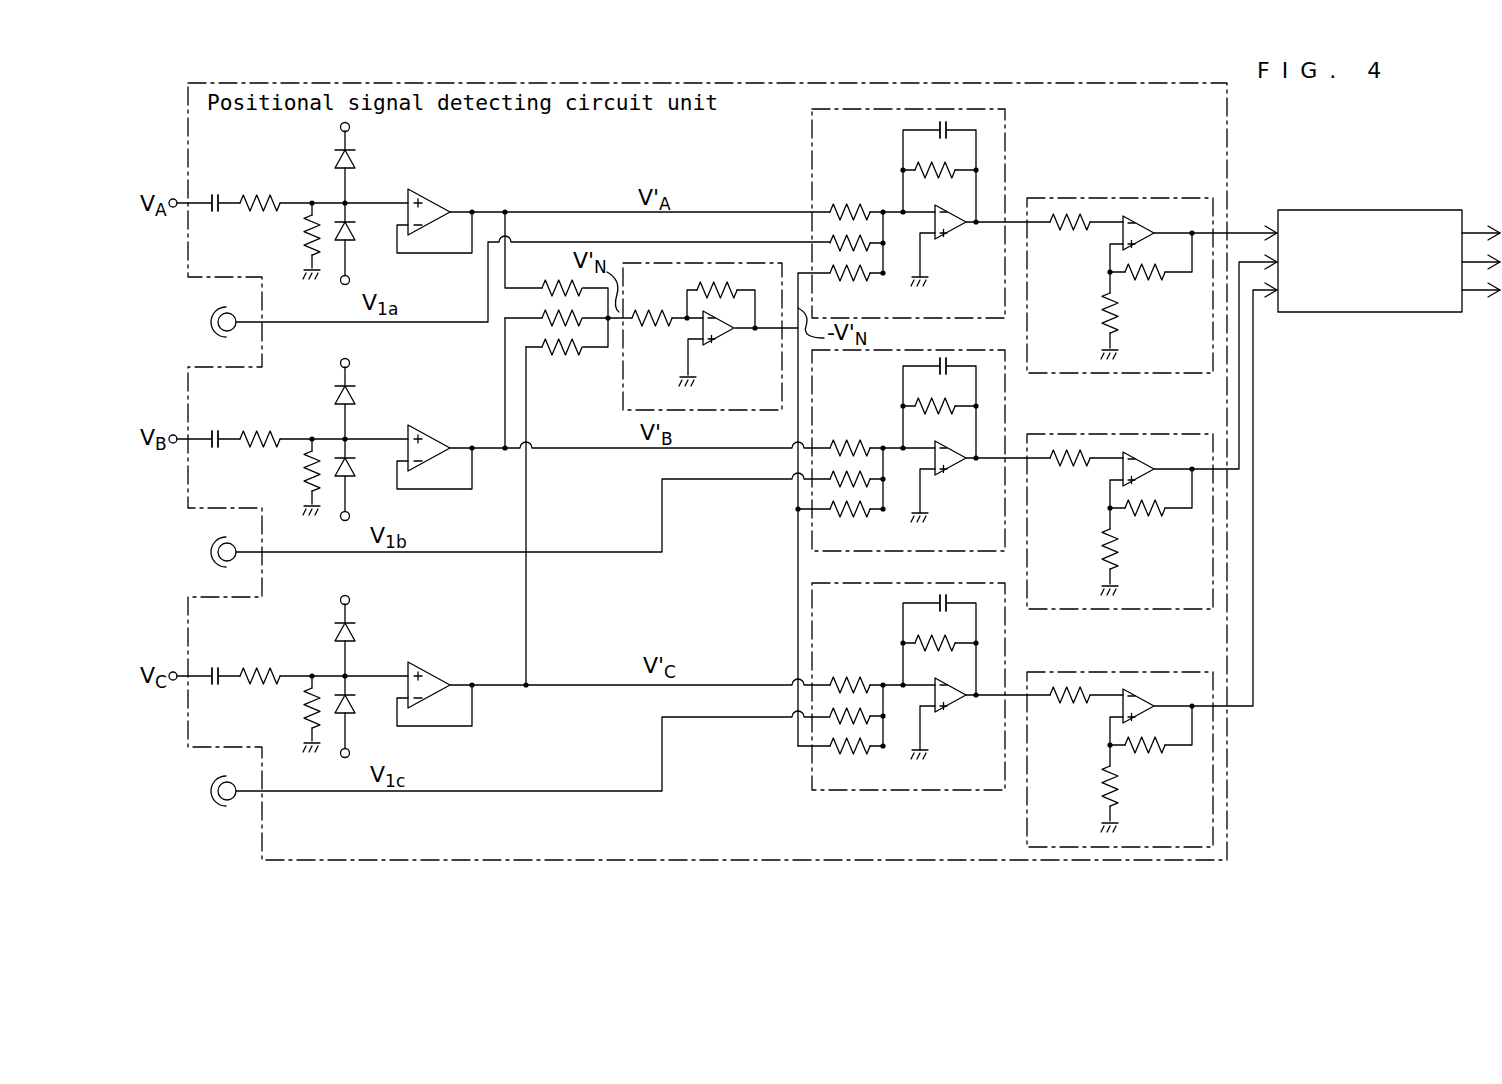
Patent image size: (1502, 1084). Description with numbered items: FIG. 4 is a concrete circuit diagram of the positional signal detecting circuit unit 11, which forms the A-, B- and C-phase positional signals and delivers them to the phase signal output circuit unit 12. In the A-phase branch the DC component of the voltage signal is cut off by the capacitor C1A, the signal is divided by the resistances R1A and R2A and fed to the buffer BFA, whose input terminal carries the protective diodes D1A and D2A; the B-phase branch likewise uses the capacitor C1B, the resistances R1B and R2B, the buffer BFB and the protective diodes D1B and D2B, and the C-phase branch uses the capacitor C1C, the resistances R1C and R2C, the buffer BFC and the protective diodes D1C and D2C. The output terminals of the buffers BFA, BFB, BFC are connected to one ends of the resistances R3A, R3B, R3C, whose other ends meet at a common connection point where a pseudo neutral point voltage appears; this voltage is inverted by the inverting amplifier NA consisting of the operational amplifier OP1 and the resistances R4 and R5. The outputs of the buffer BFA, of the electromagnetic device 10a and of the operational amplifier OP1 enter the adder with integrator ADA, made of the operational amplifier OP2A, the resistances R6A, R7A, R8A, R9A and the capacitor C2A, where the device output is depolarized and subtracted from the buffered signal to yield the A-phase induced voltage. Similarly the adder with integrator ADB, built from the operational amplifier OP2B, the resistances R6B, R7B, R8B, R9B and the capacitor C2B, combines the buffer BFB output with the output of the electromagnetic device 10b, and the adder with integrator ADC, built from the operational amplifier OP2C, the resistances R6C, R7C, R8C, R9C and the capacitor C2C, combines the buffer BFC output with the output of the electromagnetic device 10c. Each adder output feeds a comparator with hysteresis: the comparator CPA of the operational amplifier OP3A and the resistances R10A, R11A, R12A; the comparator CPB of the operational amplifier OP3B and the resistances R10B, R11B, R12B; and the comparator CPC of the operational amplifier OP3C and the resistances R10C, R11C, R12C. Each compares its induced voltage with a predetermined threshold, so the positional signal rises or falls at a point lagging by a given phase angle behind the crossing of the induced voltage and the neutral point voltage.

The electromagnetic device 10a is at (199, 322).
The electromagnetic device 10b is at (199, 552).
The electromagnetic device 10c is at (199, 791).
The positional signal detecting circuit unit 11 is at (1227, 183).
The phase signal output circuit unit 12 is at (1355, 312).
The inverting amplifier NA is at (623, 363).
The adder with integrator ADA is at (1005, 153).
The adder with integrator ADB is at (1005, 413).
The adder with integrator ADC is at (1005, 652).
The comparator with hysteresis CPA is at (1155, 197).
The comparator with hysteresis CPB is at (1198, 609).
The comparator with hysteresis CPC is at (1027, 822).
The buffer BFA is at (440, 205).
The buffer BFB is at (440, 444).
The buffer BFC is at (441, 681).
The operational amplifier OP1 is at (722, 348).
The operational amplifier OP2A is at (956, 245).
The operational amplifier OP2B is at (959, 481).
The operational amplifier OP2C is at (957, 718).
The operational amplifier OP3A is at (1162, 226).
The operational amplifier OP3B is at (1160, 462).
The operational amplifier OP3C is at (1159, 700).
The capacitor C1A is at (216, 185).
The capacitor C1B is at (217, 422).
The capacitor C1C is at (217, 661).
The capacitor C2A is at (937, 119).
The capacitor C2B is at (937, 358).
The capacitor C2C is at (937, 595).
The protective diode D1A is at (368, 164).
The protective diode D1B is at (368, 396).
The protective diode D1C is at (368, 631).
The protective diode D2A is at (367, 234).
The protective diode D2B is at (367, 462).
The protective diode D2C is at (368, 701).
The resistance R1A is at (265, 185).
The resistance R1B is at (265, 422).
The resistance R1C is at (265, 661).
The resistance R2A is at (293, 247).
The resistance R2B is at (292, 483).
The resistance R2C is at (292, 720).
The resistance R3A is at (547, 278).
The resistance R3B is at (547, 308).
The resistance R3C is at (547, 337).
The resistance R4 is at (652, 336).
The resistance R5 is at (724, 305).
The resistance R6A is at (846, 196).
The resistance R6B is at (850, 435).
The resistance R6C is at (850, 670).
The resistance R7A is at (830, 241).
The resistance R7B is at (823, 481).
The resistance R7C is at (828, 716).
The resistance R8A is at (850, 291).
The resistance R8B is at (850, 525).
The resistance R8C is at (850, 763).
The resistance R9A is at (947, 188).
The resistance R9B is at (946, 424).
The resistance R9C is at (946, 661).
The resistance R10A is at (1071, 240).
The resistance R10B is at (1072, 475).
The resistance R10C is at (1072, 714).
The resistance R11A is at (1153, 291).
The resistance R11B is at (1153, 524).
The resistance R11C is at (1153, 763).
The resistance R12A is at (1085, 326).
The resistance R12B is at (1084, 562).
The resistance R12C is at (1083, 799).